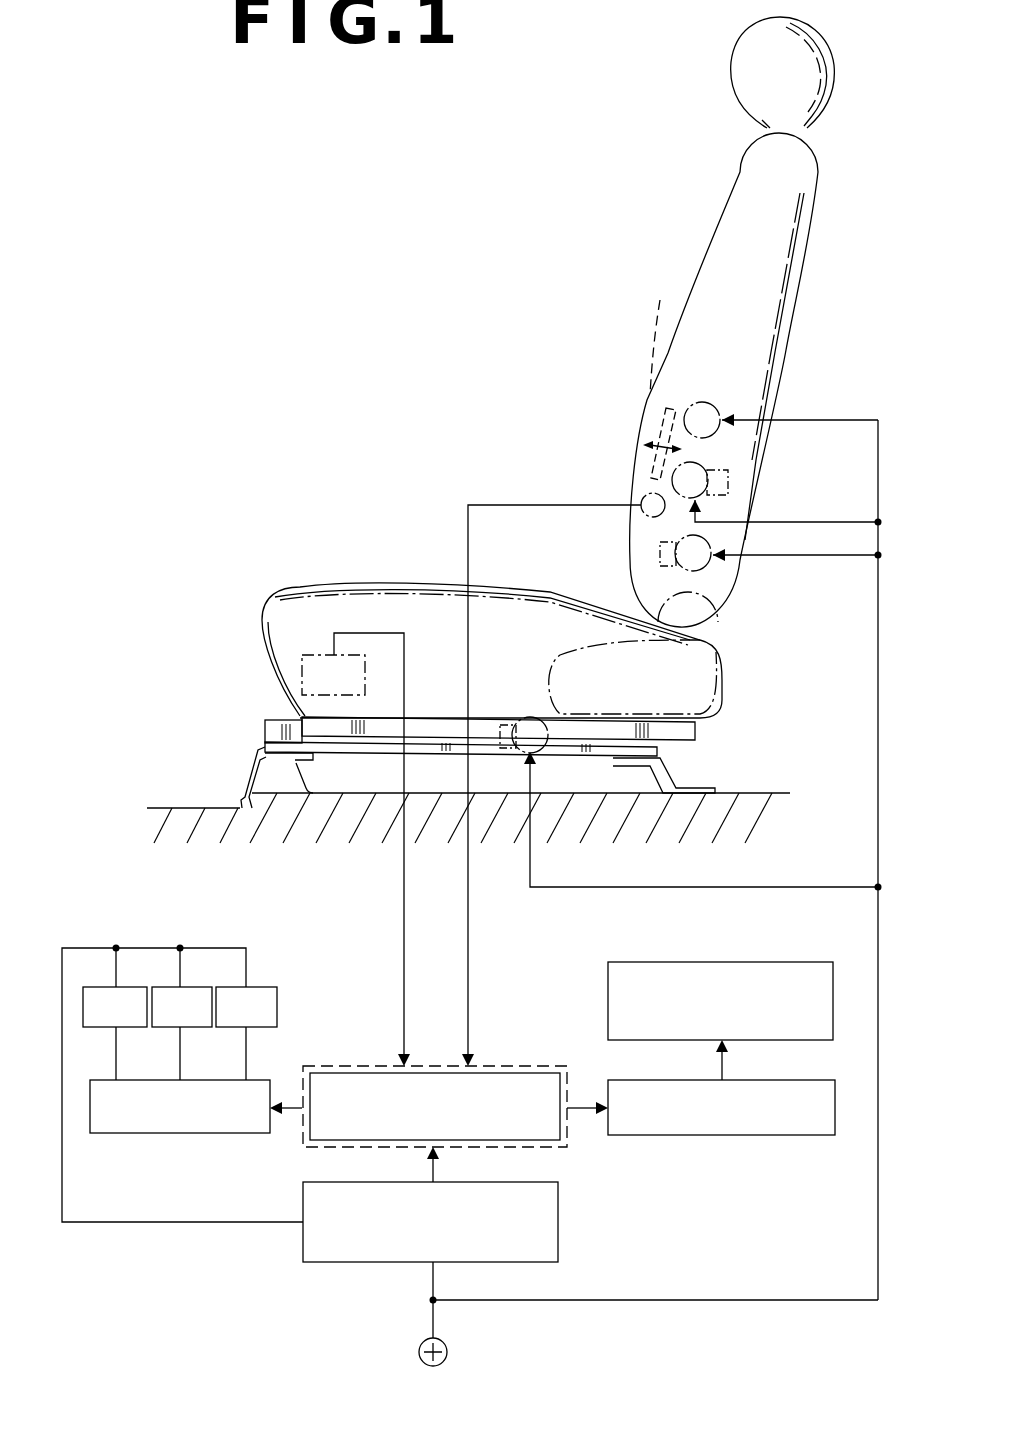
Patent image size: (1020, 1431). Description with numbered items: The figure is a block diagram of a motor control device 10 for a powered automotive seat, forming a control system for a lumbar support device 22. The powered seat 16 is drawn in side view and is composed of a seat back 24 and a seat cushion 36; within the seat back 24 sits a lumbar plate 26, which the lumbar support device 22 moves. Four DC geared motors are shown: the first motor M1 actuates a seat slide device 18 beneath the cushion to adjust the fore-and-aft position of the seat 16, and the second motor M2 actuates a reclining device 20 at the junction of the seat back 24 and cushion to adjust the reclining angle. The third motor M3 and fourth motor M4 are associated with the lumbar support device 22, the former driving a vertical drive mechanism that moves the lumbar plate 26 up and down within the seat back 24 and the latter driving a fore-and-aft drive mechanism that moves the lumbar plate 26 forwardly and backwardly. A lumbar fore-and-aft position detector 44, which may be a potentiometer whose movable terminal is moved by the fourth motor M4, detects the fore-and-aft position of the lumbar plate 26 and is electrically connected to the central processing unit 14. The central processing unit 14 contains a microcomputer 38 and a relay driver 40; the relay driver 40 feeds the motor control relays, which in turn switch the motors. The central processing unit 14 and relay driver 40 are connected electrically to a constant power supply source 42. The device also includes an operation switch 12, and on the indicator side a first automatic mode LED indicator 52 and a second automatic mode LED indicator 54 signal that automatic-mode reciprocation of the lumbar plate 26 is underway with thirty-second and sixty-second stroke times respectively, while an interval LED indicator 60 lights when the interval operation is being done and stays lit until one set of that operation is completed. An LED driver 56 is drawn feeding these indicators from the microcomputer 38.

The motor control device 10 is at (141, 834).
The operation switch 12 is at (310, 655).
The central processing unit 14 is at (556, 1148).
The powered automotive seat 16 is at (494, 384).
The seat slide device 18 is at (252, 732).
The reclining device 20 is at (722, 637).
The lumbar support device 22 is at (670, 386).
The seat back 24 is at (790, 272).
The lumbar plate 26 is at (666, 419).
The seat cushion 36 is at (357, 590).
The microcomputer 38 is at (336, 1075).
The relay driver 40 is at (708, 1137).
The constant power supply source 42 is at (340, 1265).
The lumbar fore-and-aft position detector 44 is at (634, 540).
The first automatic mode LED indicator 52 is at (275, 990).
The second automatic mode LED indicator 54 is at (200, 1030).
The LED driver 56 is at (231, 1136).
The interval LED indicator 60 is at (137, 1030).
The first motor M1 is at (522, 715).
The second motor M2 is at (718, 590).
The third motor M3 is at (702, 460).
The fourth motor M4 is at (712, 395).